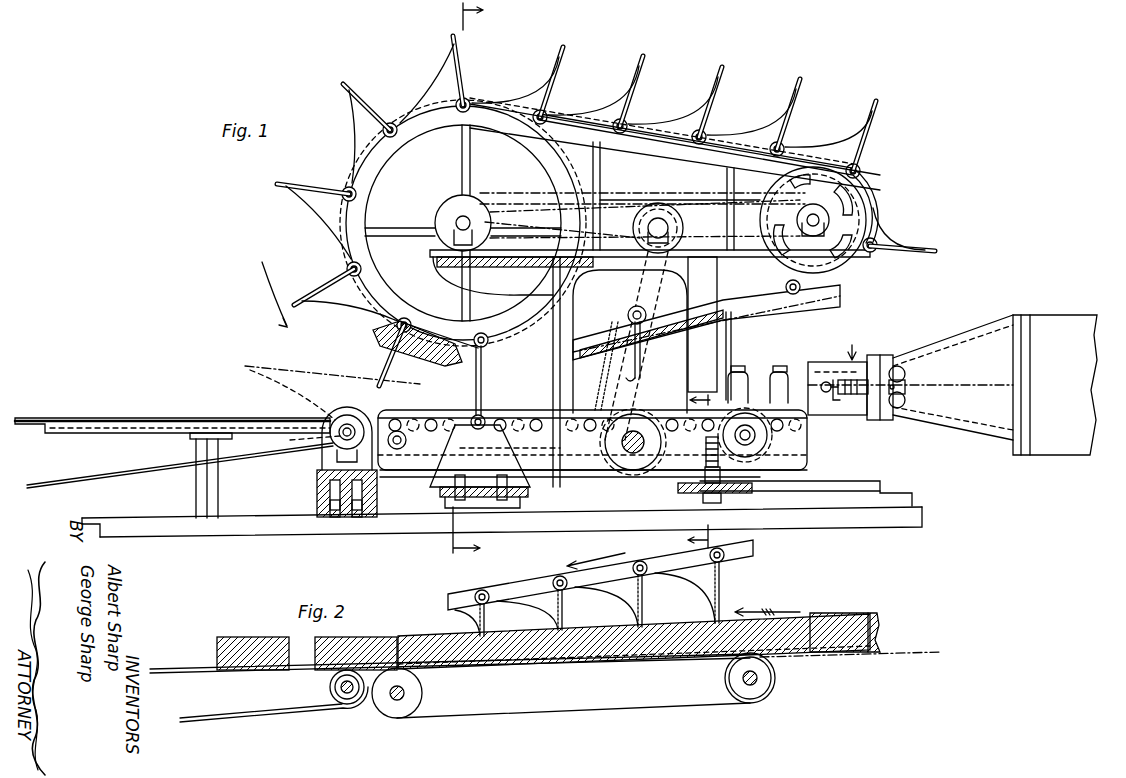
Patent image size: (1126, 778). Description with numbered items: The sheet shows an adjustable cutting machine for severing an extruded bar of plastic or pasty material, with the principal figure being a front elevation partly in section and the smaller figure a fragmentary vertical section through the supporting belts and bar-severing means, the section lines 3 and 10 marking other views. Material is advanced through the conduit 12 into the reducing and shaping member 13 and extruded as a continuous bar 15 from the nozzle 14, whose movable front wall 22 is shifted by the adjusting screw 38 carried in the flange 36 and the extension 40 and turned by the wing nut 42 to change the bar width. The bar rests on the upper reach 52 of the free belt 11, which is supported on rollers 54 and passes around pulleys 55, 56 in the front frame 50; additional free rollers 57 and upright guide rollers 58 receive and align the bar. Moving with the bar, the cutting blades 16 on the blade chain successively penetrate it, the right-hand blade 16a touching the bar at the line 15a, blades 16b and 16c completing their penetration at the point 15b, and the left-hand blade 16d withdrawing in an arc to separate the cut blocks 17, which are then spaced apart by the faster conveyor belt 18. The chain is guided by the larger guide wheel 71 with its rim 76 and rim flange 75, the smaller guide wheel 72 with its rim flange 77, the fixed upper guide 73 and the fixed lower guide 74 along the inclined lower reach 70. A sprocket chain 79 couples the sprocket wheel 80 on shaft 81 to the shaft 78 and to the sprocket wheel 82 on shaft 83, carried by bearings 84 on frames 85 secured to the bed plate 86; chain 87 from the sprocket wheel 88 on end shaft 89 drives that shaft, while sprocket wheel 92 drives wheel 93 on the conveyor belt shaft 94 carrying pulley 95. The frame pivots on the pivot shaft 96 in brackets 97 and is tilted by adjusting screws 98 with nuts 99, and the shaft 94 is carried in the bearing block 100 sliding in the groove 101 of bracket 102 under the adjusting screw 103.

In FIG. 1, the section line 3- 3 is at (455, 287).
In FIG. 1, the section line 10- 10 is at (715, 462).
In FIG. 1, the belt 11 is at (668, 478).
In FIG. 2, the belt 11 is at (606, 710).
In FIG. 1, the conduit 12 is at (1055, 320).
In FIG. 1, the reducing and shaping member 13 is at (956, 343).
In FIG. 1, the extruding nozzle 14 is at (849, 348).
In FIG. 2, the extruding nozzle 14 is at (862, 613).
In FIG. 1, the bar 15 is at (278, 372).
In FIG. 2, the bar 15 is at (788, 620).
In FIG. 2, the line 15a is at (713, 622).
In FIG. 2, the point 15b is at (500, 628).
In FIG. 1, the cutting blades 16 is at (376, 384).
In FIG. 1, the right hand blade 16a is at (731, 355).
In FIG. 2, the right hand blade 16a is at (715, 588).
In FIG. 1, the blade 16b is at (638, 363).
In FIG. 2, the blade 16b is at (637, 608).
In FIG. 1, the blade 16c is at (554, 381).
In FIG. 2, the blade 16c is at (557, 604).
In FIG. 1, the left hand blade 16d is at (474, 390).
In FIG. 2, the left hand blade 16d is at (466, 619).
In FIG. 2, the blocks 17 is at (247, 637).
In FIG. 1, the conveyor belt 18 is at (164, 470).
In FIG. 2, the conveyor belt 18 is at (252, 712).
In FIG. 1, the front wall 22 is at (828, 412).
In FIG. 1, the flange 36 is at (836, 372).
In FIG. 1, the adjusting screw 38 is at (856, 394).
In FIG. 1, the extension 40 is at (872, 355).
In FIG. 1, the wing nut 42 is at (906, 390).
In FIG. 1, the front frame 50 is at (796, 457).
In FIG. 1, the upper reach 52 is at (588, 412).
In FIG. 2, the upper reach 52 is at (574, 664).
In FIG. 1, the rollers 54 is at (510, 449).
In FIG. 1, the pulley 55 is at (406, 450).
In FIG. 2, the pulley 55 is at (388, 712).
In FIG. 1, the pulley 56 is at (776, 470).
In FIG. 2, the pulley 56 is at (751, 696).
In FIG. 1, the free rollers 57 is at (768, 436).
In FIG. 1, the upright rollers 58 is at (786, 372).
In FIG. 1, the lower reach 70 is at (655, 318).
In FIG. 1, the larger guide wheel 71 is at (403, 262).
In FIG. 1, the smaller guide wheel 72 is at (866, 205).
In FIG. 1, the fixed upper guide 73 is at (652, 148).
In FIG. 1, the fixed lower guide 74 is at (842, 295).
In FIG. 1, the rim flange 75 is at (348, 236).
In FIG. 1, the rim 76 is at (347, 270).
In FIG. 1, the rim flange 77 is at (876, 219).
In FIG. 1, the shaft 78 is at (822, 215).
In FIG. 1, the sprocket chain 79 is at (510, 195).
In FIG. 1, the sprocket wheel 80 is at (437, 206).
In FIG. 1, the shaft 81 is at (470, 223).
In FIG. 1, the sprocket wheel 82 is at (690, 232).
In FIG. 1, the shaft 83 is at (668, 220).
In FIG. 1, the bearings 84 is at (653, 205).
In FIG. 1, the frames 85 is at (570, 301).
In FIG. 1, the bed plate 86 is at (875, 488).
In FIG. 1, the chain 87 is at (637, 306).
In FIG. 1, the sprocket wheel 88 is at (612, 470).
In FIG. 1, the end shaft 89 is at (631, 452).
In FIG. 1, the sprocket wheel 92 is at (662, 446).
In FIG. 1, the wheel 93 is at (330, 445).
In FIG. 1, the conveyor belt shaft 94 is at (335, 418).
In FIG. 1, the pulley 95 is at (301, 441).
In FIG. 1, the pivot shaft 96 is at (470, 420).
In FIG. 1, the brackets 97 is at (496, 470).
In FIG. 1, the adjusting screws 98 is at (740, 494).
In FIG. 1, the nut 99 is at (721, 478).
In FIG. 1, the bearing block 100 is at (330, 440).
In FIG. 1, the groove 101 is at (325, 460).
In FIG. 1, the bracket 102 is at (322, 505).
In FIG. 1, the adjusting screw 103 is at (355, 510).